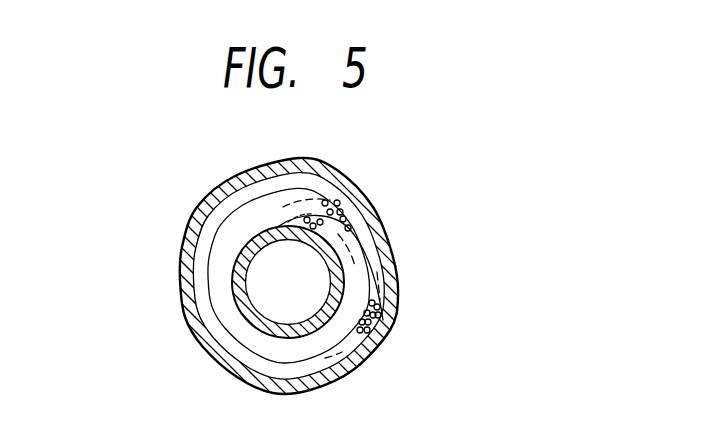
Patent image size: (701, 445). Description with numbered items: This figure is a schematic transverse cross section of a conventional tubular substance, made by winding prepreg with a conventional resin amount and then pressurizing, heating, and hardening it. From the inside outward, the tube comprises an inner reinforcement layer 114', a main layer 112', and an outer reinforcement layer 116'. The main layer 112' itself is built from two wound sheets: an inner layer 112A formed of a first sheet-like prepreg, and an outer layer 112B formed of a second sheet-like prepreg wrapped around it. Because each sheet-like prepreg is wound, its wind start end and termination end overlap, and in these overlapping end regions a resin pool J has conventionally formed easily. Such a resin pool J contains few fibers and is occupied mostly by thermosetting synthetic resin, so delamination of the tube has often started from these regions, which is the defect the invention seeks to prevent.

The outer reinforcement layer 116' is at (328, 275).
The main layer 112' is at (210, 275).
The inner layer 112A is at (220, 270).
The outer layer 112B is at (203, 308).
The inner reinforcement layer 114' is at (261, 312).
The resin pool J is at (278, 222).